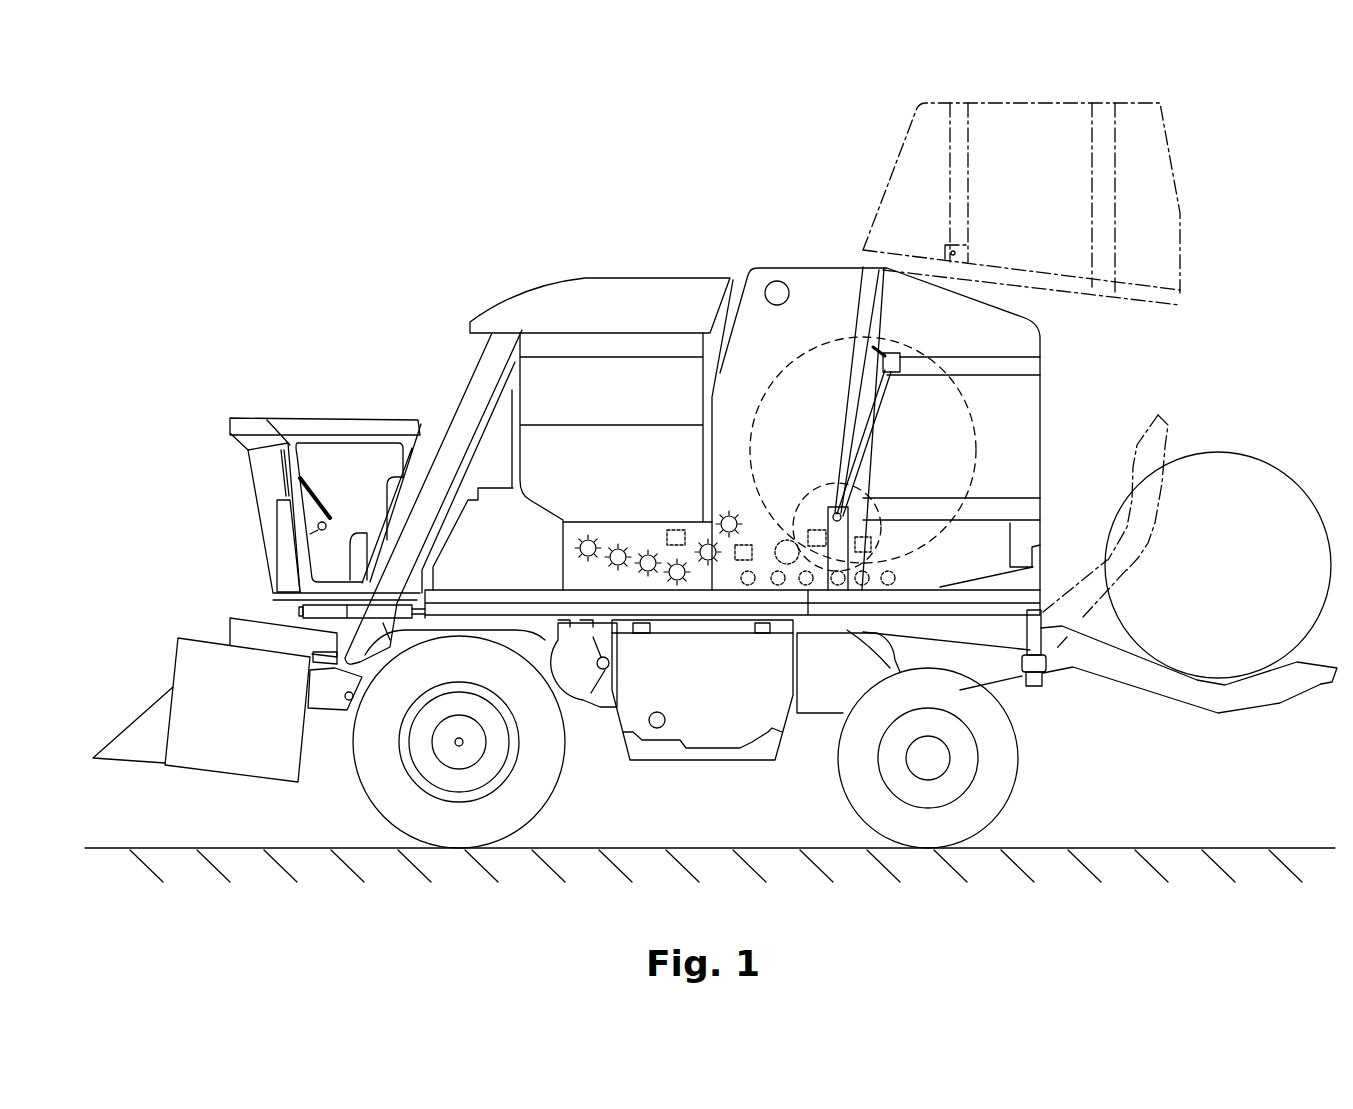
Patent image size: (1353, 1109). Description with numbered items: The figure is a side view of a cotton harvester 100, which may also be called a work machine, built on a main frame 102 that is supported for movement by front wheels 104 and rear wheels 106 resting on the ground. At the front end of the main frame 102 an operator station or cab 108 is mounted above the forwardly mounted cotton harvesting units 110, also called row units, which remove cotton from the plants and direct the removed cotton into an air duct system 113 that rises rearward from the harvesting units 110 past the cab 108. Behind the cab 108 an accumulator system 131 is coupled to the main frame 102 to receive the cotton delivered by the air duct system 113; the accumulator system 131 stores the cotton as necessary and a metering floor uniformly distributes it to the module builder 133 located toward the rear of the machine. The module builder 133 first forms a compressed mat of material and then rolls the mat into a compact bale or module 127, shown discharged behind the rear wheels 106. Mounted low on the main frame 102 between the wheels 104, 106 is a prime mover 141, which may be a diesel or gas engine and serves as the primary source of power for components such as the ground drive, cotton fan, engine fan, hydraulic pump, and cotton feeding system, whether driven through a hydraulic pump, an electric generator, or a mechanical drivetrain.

The cotton harvester 100 is at (330, 188).
The main frame 102 is at (300, 612).
The front wheels 104 is at (528, 783).
The rear wheels 106 is at (1003, 762).
The cab 108 is at (291, 441).
The cotton harvesting units 110 is at (138, 685).
The air duct system 113 is at (477, 391).
The module 127 is at (1228, 452).
The accumulator system 131 is at (571, 258).
The module builder 133 is at (828, 255).
The prime mover 141 is at (722, 722).